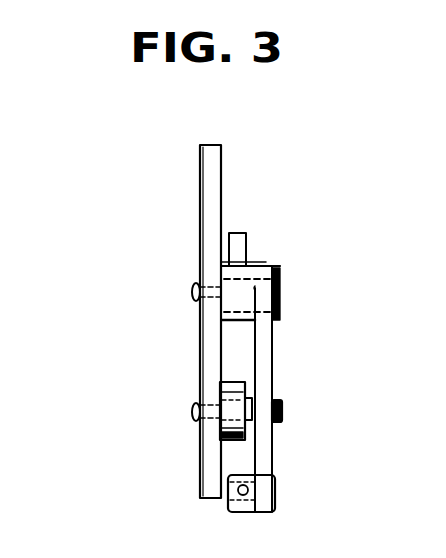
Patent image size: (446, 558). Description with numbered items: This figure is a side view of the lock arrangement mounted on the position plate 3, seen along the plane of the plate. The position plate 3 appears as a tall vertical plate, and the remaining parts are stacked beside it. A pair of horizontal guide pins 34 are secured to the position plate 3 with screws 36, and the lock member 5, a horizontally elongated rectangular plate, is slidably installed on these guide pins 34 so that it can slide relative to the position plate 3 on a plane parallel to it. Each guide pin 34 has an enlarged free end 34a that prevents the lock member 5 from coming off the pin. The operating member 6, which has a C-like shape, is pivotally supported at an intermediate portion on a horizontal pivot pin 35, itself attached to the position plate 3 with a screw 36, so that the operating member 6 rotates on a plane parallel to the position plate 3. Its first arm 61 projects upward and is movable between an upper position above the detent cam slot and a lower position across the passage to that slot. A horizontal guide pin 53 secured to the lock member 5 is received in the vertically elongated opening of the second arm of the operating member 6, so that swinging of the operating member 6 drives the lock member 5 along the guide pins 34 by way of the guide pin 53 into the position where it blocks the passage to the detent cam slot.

The position plate 3 is at (213, 163).
The first arm 61 is at (240, 233).
The pivot pin 35 is at (252, 276).
The screw 36 is at (190, 292).
The lock member 5 is at (245, 378).
The enlarged free end 34a is at (250, 400).
The guide pin 53 is at (281, 422).
The operating member 6 is at (265, 448).
The guide pin 34 is at (222, 445).